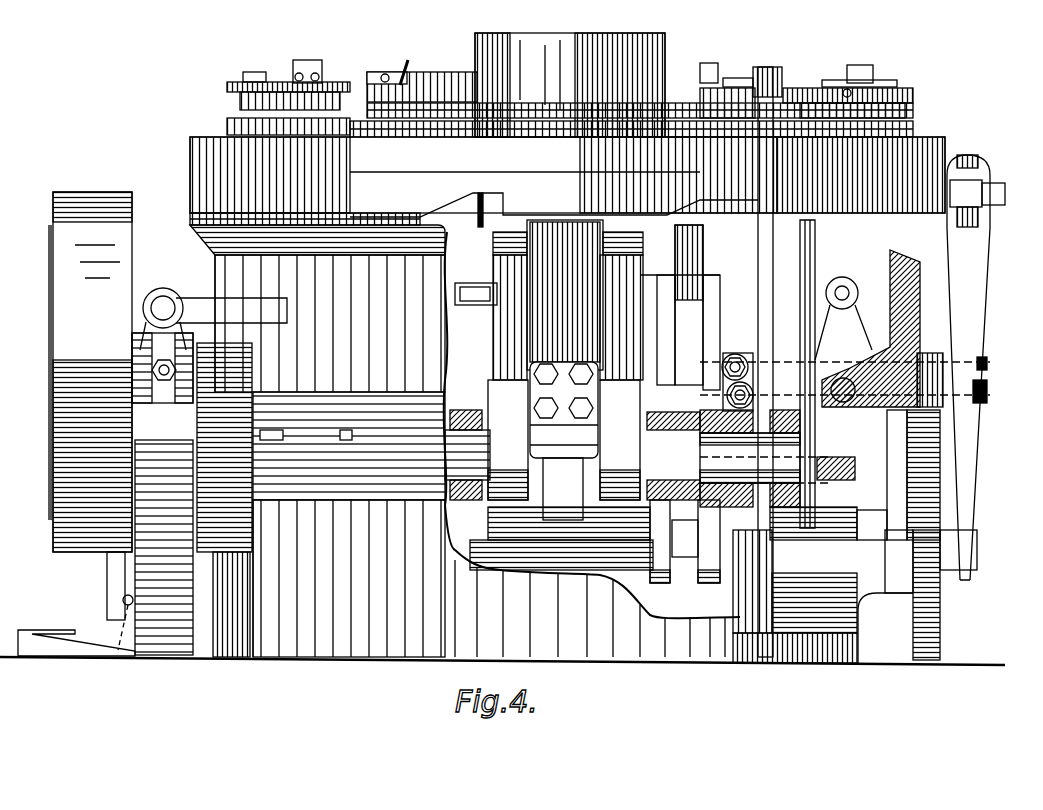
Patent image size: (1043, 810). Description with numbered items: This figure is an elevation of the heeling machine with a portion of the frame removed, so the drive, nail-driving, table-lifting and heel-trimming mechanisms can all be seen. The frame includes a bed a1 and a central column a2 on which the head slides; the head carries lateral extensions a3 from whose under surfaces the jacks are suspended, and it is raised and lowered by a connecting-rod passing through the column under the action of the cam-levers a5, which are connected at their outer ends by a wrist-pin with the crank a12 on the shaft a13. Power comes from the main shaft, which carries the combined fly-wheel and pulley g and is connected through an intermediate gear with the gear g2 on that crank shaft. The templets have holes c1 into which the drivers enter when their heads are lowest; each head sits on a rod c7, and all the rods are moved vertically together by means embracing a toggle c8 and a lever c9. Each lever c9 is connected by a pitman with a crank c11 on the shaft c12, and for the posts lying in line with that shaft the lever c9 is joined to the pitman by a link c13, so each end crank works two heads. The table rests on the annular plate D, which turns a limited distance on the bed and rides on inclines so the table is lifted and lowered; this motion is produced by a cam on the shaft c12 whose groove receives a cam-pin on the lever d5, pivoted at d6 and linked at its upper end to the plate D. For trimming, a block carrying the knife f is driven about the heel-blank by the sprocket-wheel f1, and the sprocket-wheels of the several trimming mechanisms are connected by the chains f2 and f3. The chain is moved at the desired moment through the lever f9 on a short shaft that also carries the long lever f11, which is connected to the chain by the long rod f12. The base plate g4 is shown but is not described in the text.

The combined fly-wheel and pulley g is at (76, 424).
The gear g2 is at (252, 362).
The base plate g4 is at (148, 658).
The templet holes c1 is at (567, 181).
The annular plate D is at (554, 204).
The bed a1 is at (847, 260).
The central column a2 is at (855, 596).
The lateral extensions a3 is at (565, 295).
The cam-levers a5 is at (558, 306).
The crank a12 is at (564, 441).
The shaft a13 is at (791, 475).
The rod c7 is at (684, 307).
The toggle c8 is at (713, 318).
The lever c9 is at (780, 372).
The crank c11 is at (685, 541).
The shaft c12 is at (561, 538).
The link c13 is at (742, 370).
The lever d5 is at (975, 328).
The pivot d6 is at (987, 395).
The knife f is at (410, 70).
The sprocket-wheel f1 is at (571, 97).
The chain f2 is at (640, 99).
The chain f3 is at (913, 128).
The lever f9 is at (913, 475).
The long lever f11 is at (762, 262).
The long rod f12 is at (757, 350).